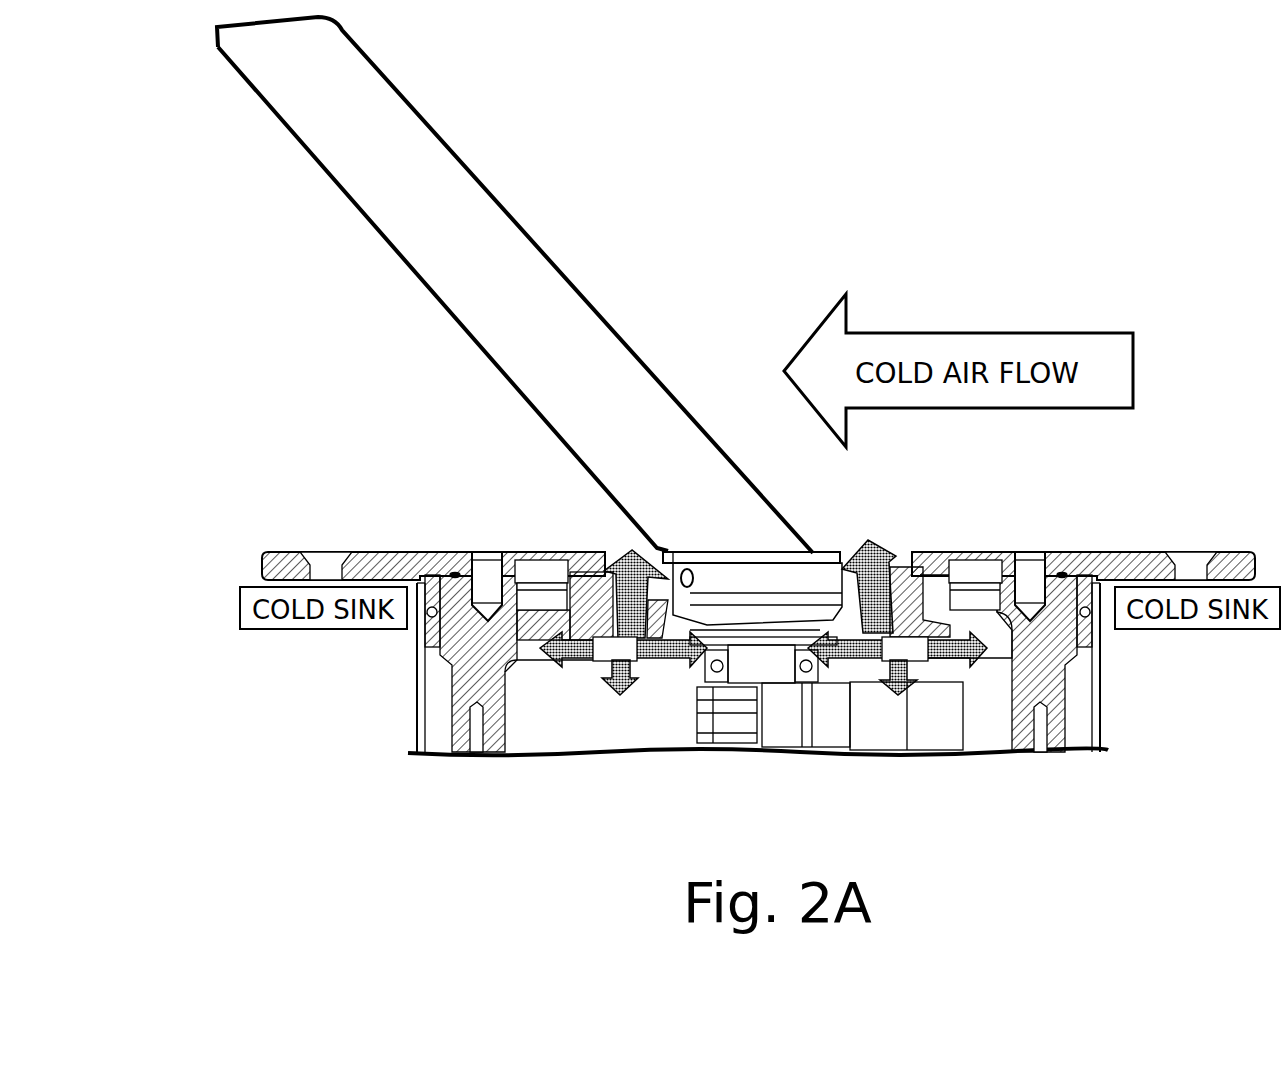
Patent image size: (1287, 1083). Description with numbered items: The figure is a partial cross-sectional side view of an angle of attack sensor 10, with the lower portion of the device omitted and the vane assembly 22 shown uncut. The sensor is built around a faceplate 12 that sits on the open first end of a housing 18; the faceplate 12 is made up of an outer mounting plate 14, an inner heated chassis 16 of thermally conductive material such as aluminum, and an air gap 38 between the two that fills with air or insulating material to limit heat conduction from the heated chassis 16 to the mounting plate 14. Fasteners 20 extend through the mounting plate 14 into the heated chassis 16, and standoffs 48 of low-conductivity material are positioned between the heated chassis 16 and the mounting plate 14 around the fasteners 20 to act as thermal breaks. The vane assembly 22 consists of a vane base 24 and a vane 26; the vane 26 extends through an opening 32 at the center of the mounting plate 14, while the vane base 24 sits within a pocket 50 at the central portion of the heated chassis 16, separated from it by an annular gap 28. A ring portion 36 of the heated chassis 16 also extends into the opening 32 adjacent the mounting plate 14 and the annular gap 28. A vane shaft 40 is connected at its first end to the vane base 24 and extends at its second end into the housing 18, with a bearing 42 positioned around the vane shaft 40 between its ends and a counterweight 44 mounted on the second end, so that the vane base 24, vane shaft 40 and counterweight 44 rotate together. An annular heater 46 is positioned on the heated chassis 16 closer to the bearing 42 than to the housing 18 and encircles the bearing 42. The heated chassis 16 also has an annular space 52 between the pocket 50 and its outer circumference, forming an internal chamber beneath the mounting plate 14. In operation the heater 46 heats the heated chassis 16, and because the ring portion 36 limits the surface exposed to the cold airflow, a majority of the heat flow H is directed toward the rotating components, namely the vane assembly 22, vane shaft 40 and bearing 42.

The angle of attack sensor 10 is at (758, 411).
The faceplate 12 is at (379, 609).
The mounting plate 14 is at (1235, 565).
The heated chassis 16 is at (478, 657).
The housing 18 is at (1097, 705).
The fasteners 20 is at (1030, 585).
The vane assembly 22 is at (591, 506).
The vane base 24 is at (742, 582).
The vane 26 is at (340, 133).
The annular gap 28 is at (672, 551).
The opening 32 is at (892, 554).
The ring portion 36 is at (893, 550).
The air gap 38 is at (428, 553).
The vane shaft 40 is at (771, 667).
The bearing 42 is at (700, 645).
The counterweight 44 is at (917, 737).
The heater 46 is at (918, 650).
The standoffs 48 is at (1003, 582).
The pocket 50 is at (664, 594).
The annular space 52 is at (537, 623).
The heat flow H is at (636, 551).